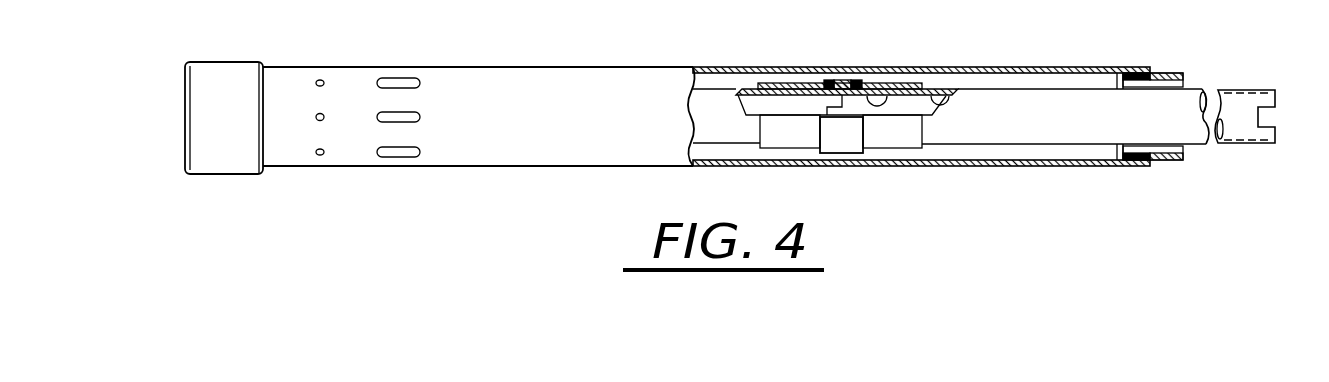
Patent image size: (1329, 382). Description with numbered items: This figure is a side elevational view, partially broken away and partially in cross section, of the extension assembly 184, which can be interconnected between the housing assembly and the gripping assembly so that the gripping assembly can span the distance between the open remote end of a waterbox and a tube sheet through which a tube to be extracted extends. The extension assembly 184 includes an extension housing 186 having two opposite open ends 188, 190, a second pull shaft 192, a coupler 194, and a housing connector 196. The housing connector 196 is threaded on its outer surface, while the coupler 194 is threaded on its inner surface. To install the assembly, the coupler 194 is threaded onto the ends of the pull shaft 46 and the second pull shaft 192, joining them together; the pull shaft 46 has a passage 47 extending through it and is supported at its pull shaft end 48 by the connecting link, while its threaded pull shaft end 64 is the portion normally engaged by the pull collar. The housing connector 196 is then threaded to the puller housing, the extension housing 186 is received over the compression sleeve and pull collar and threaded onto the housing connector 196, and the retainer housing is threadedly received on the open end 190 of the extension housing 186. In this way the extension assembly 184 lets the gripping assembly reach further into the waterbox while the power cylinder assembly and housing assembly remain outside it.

The extension assembly 184 is at (513, 175).
The extension housing 186 is at (704, 67).
The open end 188 is at (1143, 73).
The open end 190 is at (263, 66).
The inner sleeve 192 is at (744, 92).
The coupler 194 is at (893, 149).
The housing connector 196 is at (1168, 161).
The pull shaft 46 is at (1053, 89).
The passage 47 is at (932, 113).
The pull shaft end 48 is at (1248, 90).
The threaded pull shaft end 64 is at (893, 97).